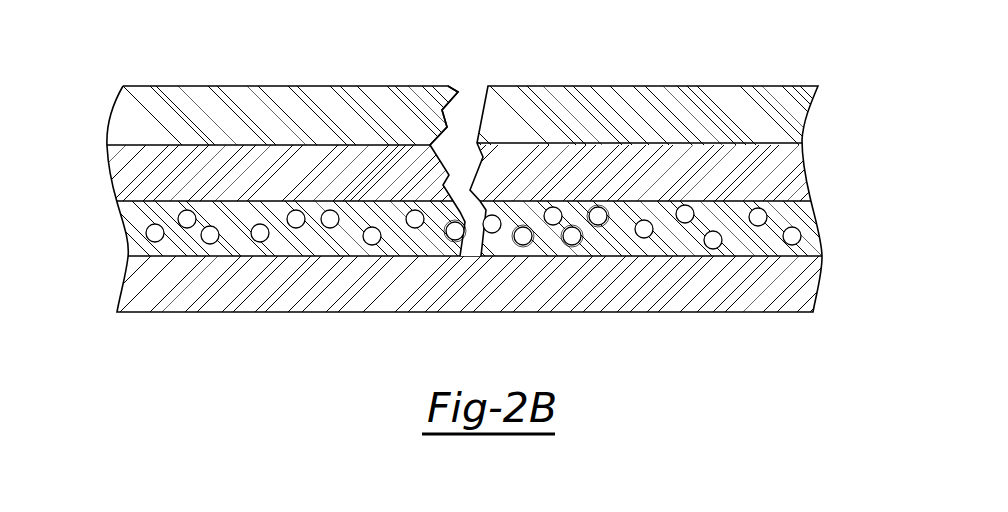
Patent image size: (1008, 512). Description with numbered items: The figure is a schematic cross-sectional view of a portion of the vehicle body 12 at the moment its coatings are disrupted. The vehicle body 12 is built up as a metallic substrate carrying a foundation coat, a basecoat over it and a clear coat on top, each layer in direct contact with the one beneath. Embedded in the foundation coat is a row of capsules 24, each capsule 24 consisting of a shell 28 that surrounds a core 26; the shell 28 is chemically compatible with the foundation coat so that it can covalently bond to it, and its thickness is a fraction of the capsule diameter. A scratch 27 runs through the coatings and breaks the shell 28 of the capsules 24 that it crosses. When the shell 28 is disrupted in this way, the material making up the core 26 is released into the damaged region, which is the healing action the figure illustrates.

The vehicle body 12 is at (86, 116).
The capsule 24 is at (570, 260).
The core 26 is at (458, 222).
The scratch 27 is at (448, 103).
The shell 28 is at (447, 233).